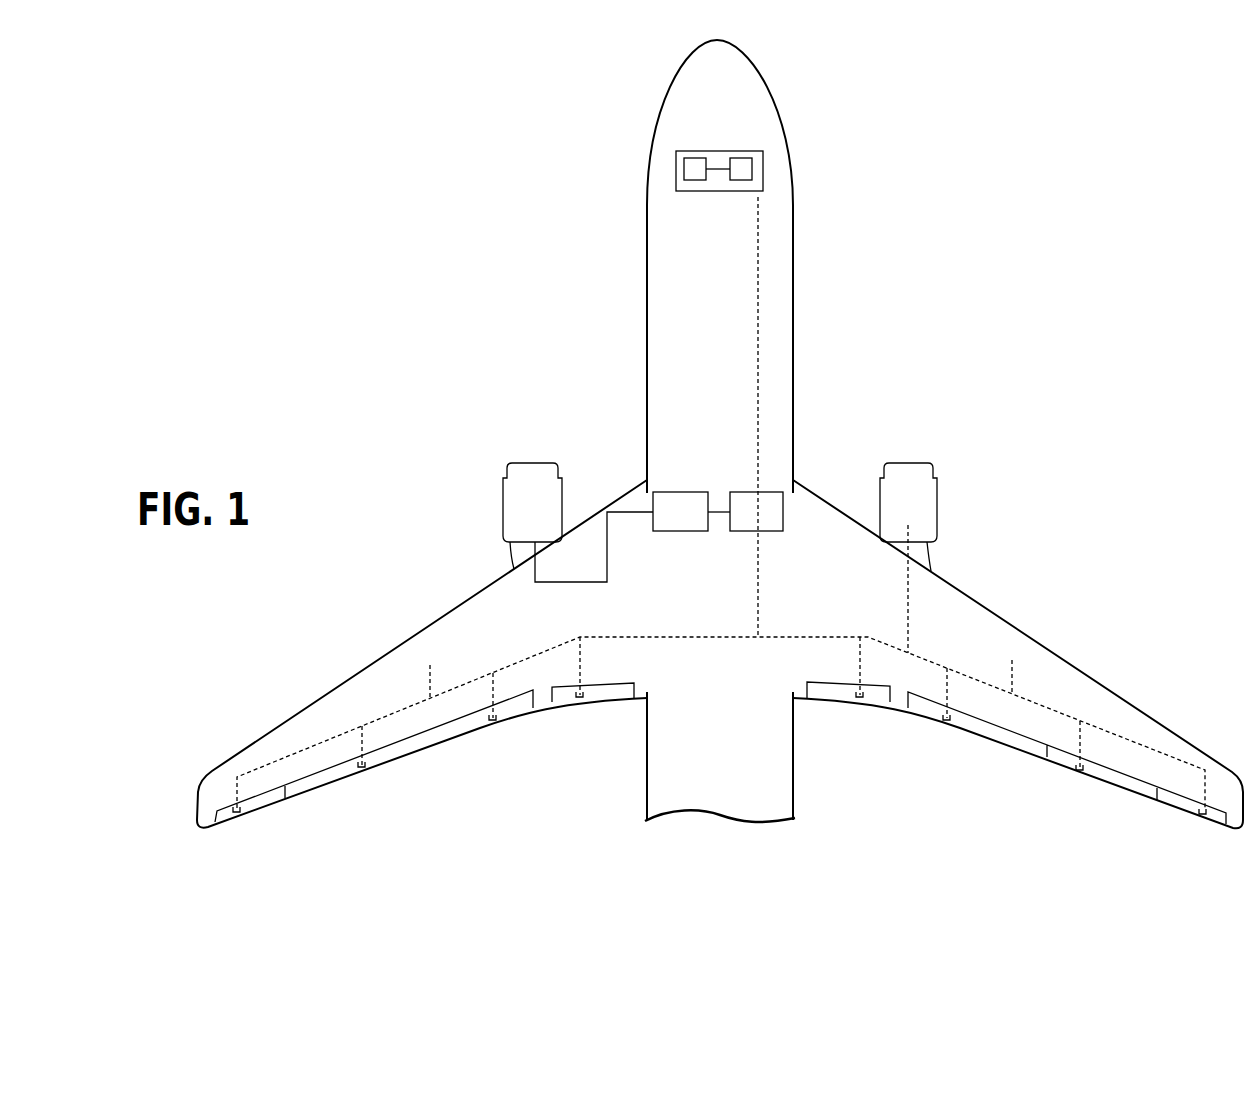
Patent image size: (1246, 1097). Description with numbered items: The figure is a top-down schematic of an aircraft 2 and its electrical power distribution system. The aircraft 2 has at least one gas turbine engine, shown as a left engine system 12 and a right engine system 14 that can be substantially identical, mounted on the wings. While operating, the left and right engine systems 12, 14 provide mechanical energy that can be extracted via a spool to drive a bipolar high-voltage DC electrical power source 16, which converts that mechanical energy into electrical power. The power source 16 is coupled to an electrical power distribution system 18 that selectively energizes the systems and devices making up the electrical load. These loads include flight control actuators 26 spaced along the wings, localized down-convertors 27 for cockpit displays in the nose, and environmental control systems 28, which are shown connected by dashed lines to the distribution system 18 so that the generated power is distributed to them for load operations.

The aircraft 2 is at (546, 73).
The left engine system 12 is at (533, 470).
The right engine system 14 is at (918, 476).
The electrical power source 16 is at (672, 492).
The electrical power distribution system 18 is at (770, 492).
The flight control actuators 26 is at (240, 815).
The localized down-convertors 27 is at (691, 181).
The environmental control systems 28 is at (434, 662).